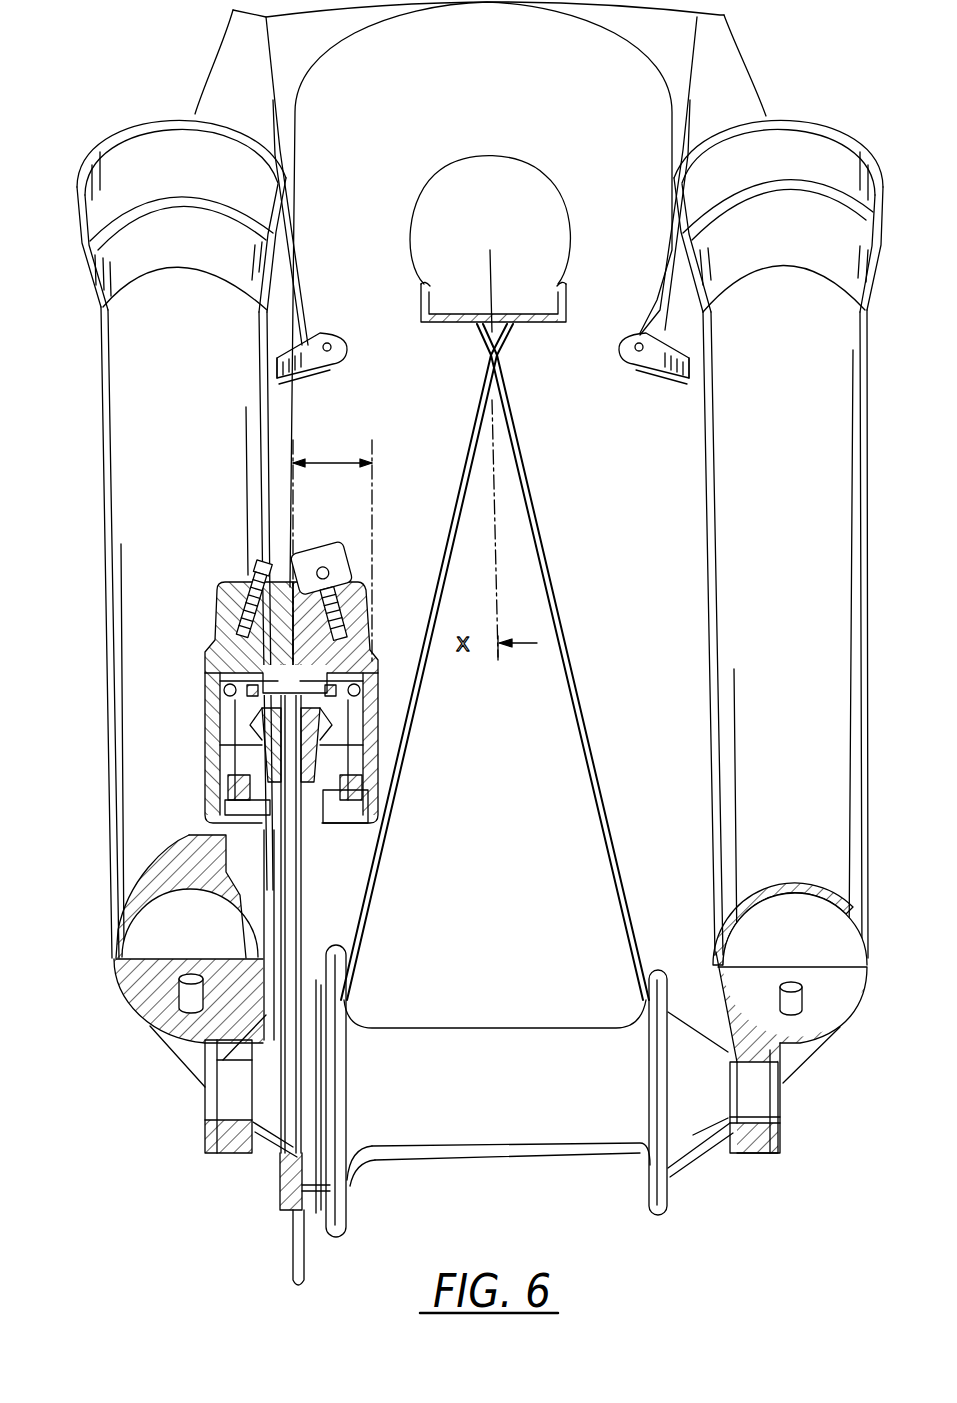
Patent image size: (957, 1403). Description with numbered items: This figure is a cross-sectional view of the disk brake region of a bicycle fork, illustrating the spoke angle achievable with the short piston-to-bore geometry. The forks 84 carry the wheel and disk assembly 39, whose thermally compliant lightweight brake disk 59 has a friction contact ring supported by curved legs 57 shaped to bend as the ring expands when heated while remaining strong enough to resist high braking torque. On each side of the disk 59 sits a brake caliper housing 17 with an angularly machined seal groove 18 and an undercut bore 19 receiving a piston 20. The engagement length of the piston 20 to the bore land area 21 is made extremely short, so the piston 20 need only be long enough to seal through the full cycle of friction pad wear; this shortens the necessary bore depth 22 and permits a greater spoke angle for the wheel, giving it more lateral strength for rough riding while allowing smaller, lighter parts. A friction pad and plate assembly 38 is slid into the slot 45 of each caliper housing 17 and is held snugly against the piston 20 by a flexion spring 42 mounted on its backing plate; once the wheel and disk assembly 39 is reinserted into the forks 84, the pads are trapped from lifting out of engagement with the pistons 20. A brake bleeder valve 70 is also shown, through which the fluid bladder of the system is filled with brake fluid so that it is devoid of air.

The brake caliper housing 17 is at (380, 752).
The angularly machined seal groove 18 is at (358, 822).
The undercut bore 19 is at (277, 697).
The piston 20 is at (233, 718).
The bore land area 21 is at (270, 803).
The bore depth 22 is at (230, 783).
The friction pad and plate assembly 38 is at (263, 839).
The wheel and disk assembly 39 is at (523, 158).
The flexion spring 42 is at (262, 652).
The slot 45 is at (433, 632).
The curved leg 57 is at (302, 892).
The brake disk 59 is at (294, 957).
The brake bleeder valve 70 is at (250, 575).
The fork 84 is at (233, 1155).